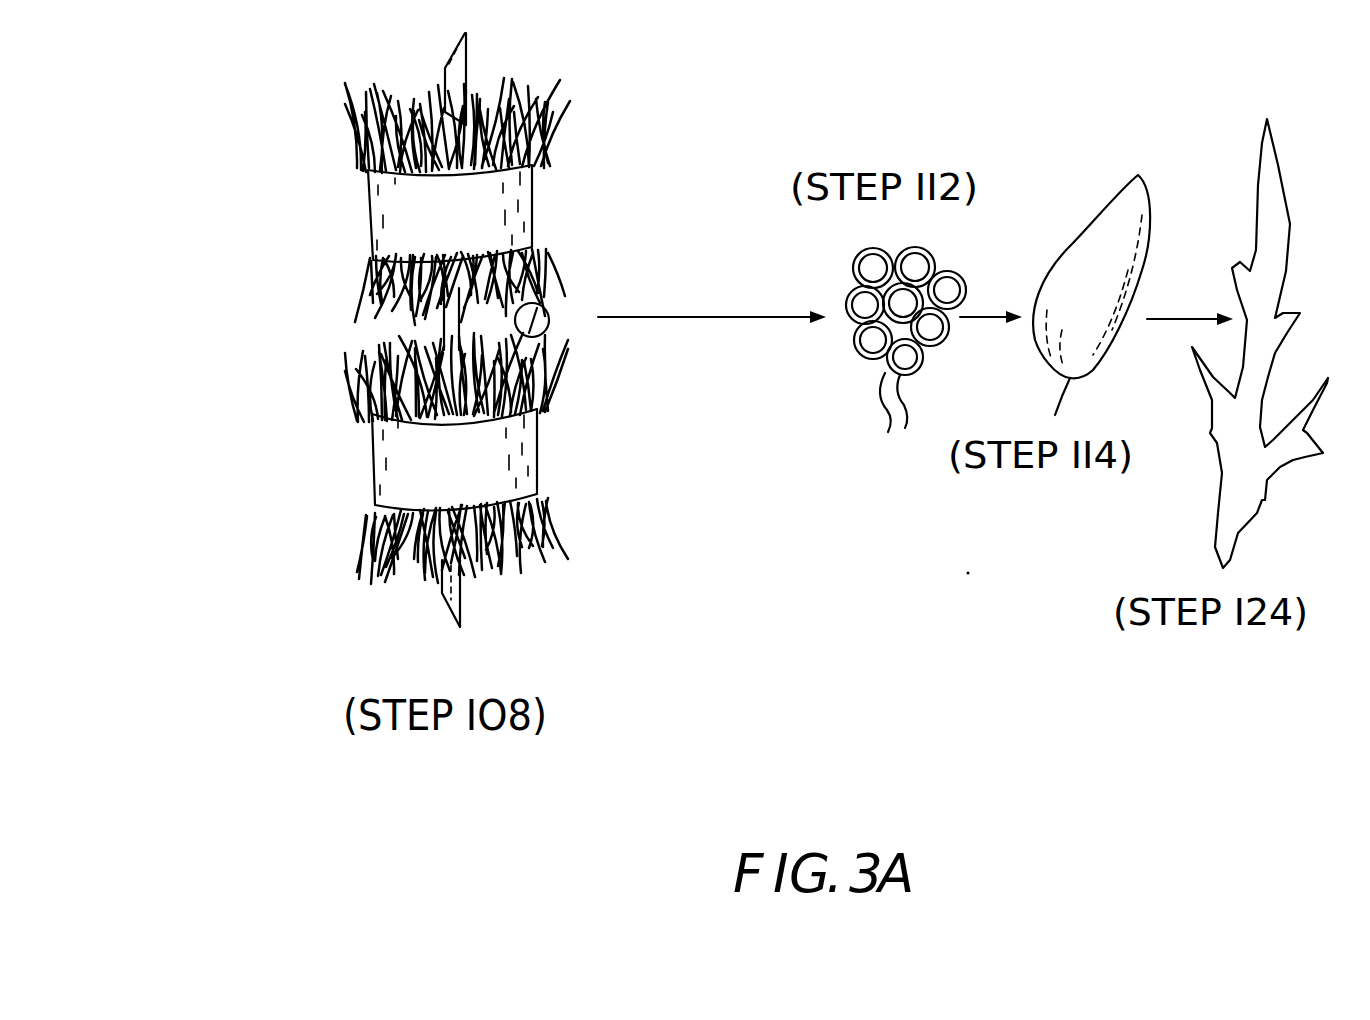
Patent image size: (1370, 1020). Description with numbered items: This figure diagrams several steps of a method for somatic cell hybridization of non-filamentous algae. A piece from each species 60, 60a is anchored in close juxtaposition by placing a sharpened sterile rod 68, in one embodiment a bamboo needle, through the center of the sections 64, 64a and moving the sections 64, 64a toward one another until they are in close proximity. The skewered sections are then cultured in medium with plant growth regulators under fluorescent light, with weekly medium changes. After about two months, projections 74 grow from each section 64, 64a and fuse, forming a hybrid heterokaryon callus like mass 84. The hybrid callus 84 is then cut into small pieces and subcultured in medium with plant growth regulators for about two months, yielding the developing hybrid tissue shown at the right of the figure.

The piece of the first species 60 is at (359, 215).
The section 64 is at (533, 197).
The projection 74 is at (543, 308).
The piece of the second species 60a is at (363, 458).
The section 64a is at (540, 478).
The sharpened sterile rod 68 is at (443, 595).
The hybrid heterokaryon callus like mass 84 is at (853, 266).